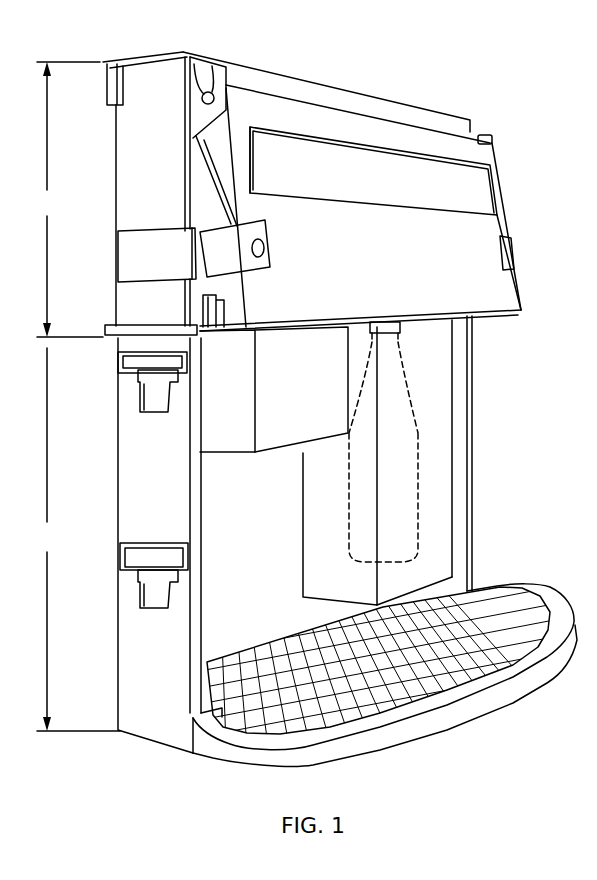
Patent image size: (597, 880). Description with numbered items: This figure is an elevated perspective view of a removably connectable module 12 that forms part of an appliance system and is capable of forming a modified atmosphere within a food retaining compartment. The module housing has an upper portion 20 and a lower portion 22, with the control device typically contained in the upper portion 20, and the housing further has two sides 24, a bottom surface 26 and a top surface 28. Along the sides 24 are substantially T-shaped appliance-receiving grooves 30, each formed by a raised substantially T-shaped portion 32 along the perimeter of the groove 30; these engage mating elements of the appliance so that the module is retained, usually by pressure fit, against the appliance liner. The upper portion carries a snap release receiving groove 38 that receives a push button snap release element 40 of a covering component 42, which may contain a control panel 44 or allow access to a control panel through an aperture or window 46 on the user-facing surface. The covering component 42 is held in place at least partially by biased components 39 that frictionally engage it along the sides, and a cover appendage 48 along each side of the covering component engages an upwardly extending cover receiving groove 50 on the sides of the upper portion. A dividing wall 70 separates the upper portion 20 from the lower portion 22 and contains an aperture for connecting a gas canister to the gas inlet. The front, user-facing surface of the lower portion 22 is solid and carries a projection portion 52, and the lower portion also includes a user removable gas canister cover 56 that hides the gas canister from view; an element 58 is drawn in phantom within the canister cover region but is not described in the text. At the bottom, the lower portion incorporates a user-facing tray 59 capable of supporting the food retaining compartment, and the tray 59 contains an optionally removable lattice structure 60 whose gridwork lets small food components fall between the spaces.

The module 12 is at (497, 76).
The upper portion 20 is at (69, 199).
The lower portion 22 is at (78, 539).
The sides 24 is at (146, 688).
The bottom surface 26 is at (450, 712).
The top surface 28 is at (348, 88).
The T-shaped appliance-receiving groove 30 is at (133, 377).
The raised T-shaped portion 32 is at (117, 358).
The snap release receiving groove 38 is at (141, 267).
The biased component 39 is at (217, 308).
The push button snap release element 40 is at (214, 264).
The covering component 42 is at (349, 270).
The control panel 44 is at (349, 186).
The aperture/window 46 is at (500, 185).
The cover appendage 48 is at (196, 64).
The cover receiving groove 50 is at (210, 70).
The projection portion 52 is at (286, 394).
The gas canister cover 56 is at (432, 442).
The bottle body 58 is at (420, 466).
The tray 59 is at (500, 663).
The lattice structure 60 is at (473, 613).
The dividing wall 70 is at (124, 327).